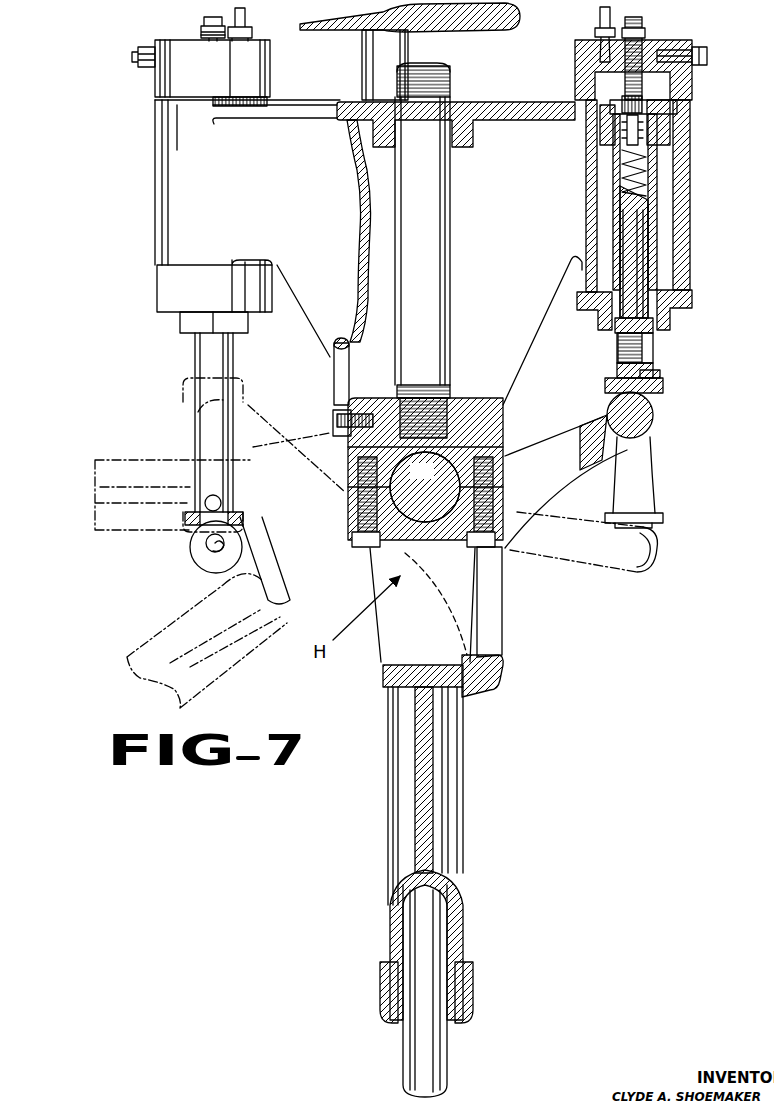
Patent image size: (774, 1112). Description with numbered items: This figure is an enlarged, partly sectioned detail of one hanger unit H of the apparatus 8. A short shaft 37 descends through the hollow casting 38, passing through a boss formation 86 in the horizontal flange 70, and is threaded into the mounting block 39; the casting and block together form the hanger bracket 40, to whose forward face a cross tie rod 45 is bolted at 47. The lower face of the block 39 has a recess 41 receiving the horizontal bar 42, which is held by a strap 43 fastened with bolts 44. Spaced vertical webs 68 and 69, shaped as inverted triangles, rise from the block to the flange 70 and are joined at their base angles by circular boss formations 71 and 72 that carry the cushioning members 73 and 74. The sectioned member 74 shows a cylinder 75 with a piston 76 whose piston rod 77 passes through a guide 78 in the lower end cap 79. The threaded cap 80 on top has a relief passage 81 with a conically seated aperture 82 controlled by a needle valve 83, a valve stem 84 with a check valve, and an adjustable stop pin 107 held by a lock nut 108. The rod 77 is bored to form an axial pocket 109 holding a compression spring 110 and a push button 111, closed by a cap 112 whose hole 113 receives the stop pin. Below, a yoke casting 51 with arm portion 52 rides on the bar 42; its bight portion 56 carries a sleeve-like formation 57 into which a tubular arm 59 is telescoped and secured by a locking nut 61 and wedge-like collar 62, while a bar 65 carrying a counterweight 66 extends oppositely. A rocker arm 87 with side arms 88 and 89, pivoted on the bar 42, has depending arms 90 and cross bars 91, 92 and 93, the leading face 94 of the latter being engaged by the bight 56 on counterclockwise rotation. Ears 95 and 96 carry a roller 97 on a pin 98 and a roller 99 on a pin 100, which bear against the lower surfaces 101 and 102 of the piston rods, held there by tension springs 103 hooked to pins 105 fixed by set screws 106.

The apparatus 8 is at (447, 351).
The short shaft 37 is at (428, 243).
The hollow casting 38 is at (331, 245).
The mounting block 39 is at (478, 412).
The hanger bracket 40 is at (323, 300).
The recess 41 is at (445, 470).
The bar 42 is at (427, 522).
The straps 43 is at (457, 533).
The bolts 44 is at (367, 535).
The cross tie rod 45 is at (348, 365).
The bolt 47 is at (337, 420).
The yoke casting 51 is at (405, 797).
The arm portion 52 is at (440, 628).
The bight portion 56 is at (432, 668).
The sleeve-like formation 57 is at (455, 913).
The tubular arm 59 is at (443, 1062).
The locking nut 61 is at (380, 987).
The wedge-like collar 62 is at (455, 990).
The bar 65 is at (375, 70).
The counterweight 66 is at (518, 22).
The vertical web 68 is at (326, 198).
The vertical web 69 is at (528, 198).
The horizontal flange 70 is at (315, 113).
The circular boss formation 71 is at (170, 212).
The circular boss formation 72 is at (692, 213).
The cushioning member 73 is at (180, 83).
The cushioning member 74 is at (665, 172).
The cylinder 75 is at (682, 190).
The piston 76 is at (660, 142).
The piston rod 77 is at (635, 213).
The guide 78 is at (655, 323).
The lower end cap 79 is at (220, 298).
The threaded cap 80 is at (220, 71).
The relief passage 81 is at (667, 43).
The aperture 82 is at (677, 67).
The needle valve 83 is at (132, 50).
The valve stem 84 is at (243, 17).
The boss formation 86 is at (470, 135).
The rocker arm 87 is at (543, 474).
The side arm 88 is at (565, 541).
The side arm 89 is at (270, 442).
The depending arm 90 is at (493, 618).
The cross bar 91 is at (260, 517).
The cross bar 92 is at (595, 413).
The cross bar 93 is at (487, 692).
The leading face 94 is at (453, 668).
The ears 95 is at (227, 568).
The ears 96 is at (623, 443).
The roller 97 is at (197, 402).
The pin 98 is at (205, 545).
The roller 99 is at (650, 430).
The pin 100 is at (633, 413).
The lower surface 101 is at (190, 395).
The lower surface 102 is at (663, 388).
The tension spring 103 is at (237, 513).
The pin 105 is at (632, 373).
The set screw 106 is at (658, 373).
The stop pin 107 is at (210, 19).
The lock nut 108 is at (201, 35).
The axial pocket 109 is at (610, 163).
The compression spring 110 is at (623, 183).
The push button 111 is at (643, 105).
The cap 112 is at (608, 88).
The hole 113 is at (661, 93).